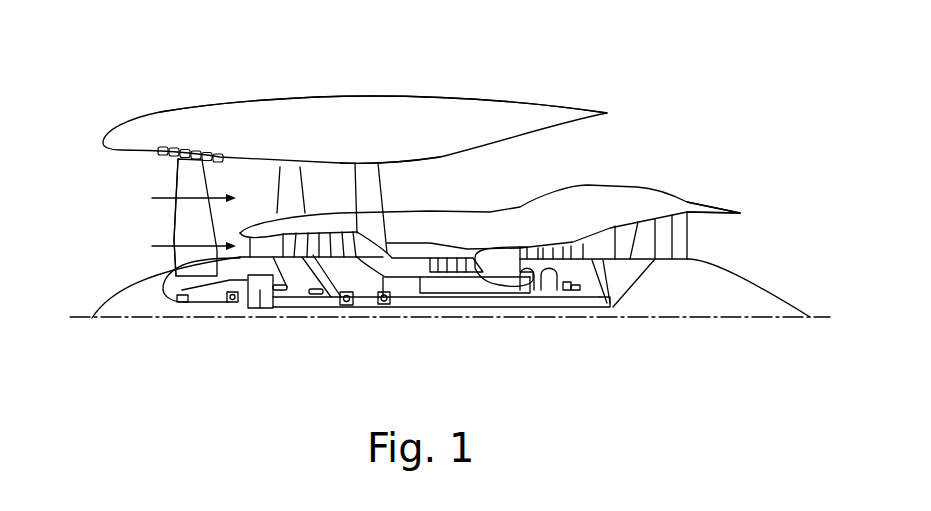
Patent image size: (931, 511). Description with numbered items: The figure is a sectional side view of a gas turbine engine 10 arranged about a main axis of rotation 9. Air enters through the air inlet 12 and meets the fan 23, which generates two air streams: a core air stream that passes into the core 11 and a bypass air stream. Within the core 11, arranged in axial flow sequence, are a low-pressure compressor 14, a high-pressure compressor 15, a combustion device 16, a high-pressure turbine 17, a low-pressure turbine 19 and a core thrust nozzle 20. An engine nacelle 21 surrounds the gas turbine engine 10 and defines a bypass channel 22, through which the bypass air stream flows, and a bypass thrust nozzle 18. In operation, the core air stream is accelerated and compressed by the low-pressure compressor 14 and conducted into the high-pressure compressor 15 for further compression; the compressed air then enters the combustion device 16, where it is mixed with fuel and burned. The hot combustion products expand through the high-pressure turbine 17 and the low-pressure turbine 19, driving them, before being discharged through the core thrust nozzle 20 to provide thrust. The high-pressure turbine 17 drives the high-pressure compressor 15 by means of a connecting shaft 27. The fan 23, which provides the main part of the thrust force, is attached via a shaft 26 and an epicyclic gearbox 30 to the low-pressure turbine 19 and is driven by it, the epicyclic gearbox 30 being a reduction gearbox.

The main axis of rotation 9 is at (713, 320).
The gas turbine engine 10 is at (150, 110).
The core 11 is at (512, 234).
The air inlet 12 is at (108, 172).
The low-pressure compressor 14 is at (315, 240).
The high-pressure compressor 15 is at (441, 252).
The combustion device 16 is at (493, 268).
The high-pressure turbine 17 is at (553, 247).
The bypass thrust nozzle 18 is at (702, 109).
The low-pressure turbine 19 is at (665, 250).
The core thrust nozzle 20 is at (752, 246).
The engine nacelle 21 is at (372, 108).
The bypass channel 22 is at (573, 151).
The fan 23 is at (180, 233).
The shaft 26 is at (408, 306).
The connecting shaft 27 is at (463, 300).
The epicyclic gearbox 30 is at (260, 302).